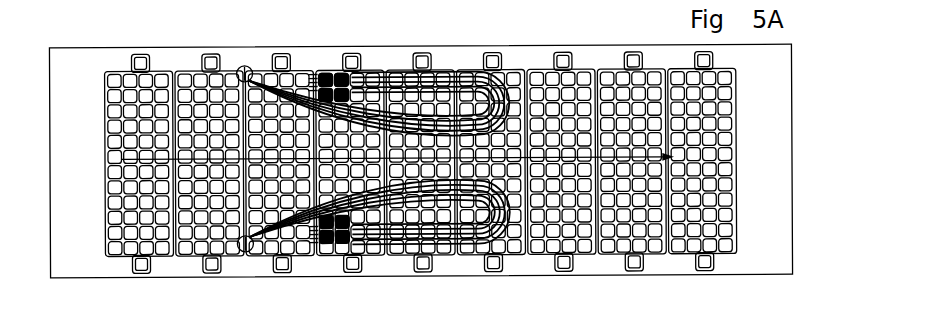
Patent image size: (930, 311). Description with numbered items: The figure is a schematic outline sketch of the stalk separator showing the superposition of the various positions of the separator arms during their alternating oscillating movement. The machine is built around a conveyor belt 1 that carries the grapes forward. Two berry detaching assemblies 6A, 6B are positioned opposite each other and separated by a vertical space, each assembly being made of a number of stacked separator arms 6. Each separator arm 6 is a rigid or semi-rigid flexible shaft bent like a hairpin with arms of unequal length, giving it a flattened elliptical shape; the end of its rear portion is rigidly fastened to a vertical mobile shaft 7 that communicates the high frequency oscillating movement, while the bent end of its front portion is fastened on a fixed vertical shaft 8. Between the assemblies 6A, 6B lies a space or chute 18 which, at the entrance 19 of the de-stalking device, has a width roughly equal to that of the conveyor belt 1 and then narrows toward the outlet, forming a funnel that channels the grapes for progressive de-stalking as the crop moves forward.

The conveyor belt 1 is at (420, 177).
The separator arm 6 is at (355, 192).
The berry detaching assembly 6A is at (512, 95).
The berry detaching assembly 6B is at (512, 221).
The vertical mobile shaft 7 is at (327, 252).
The fixed vertical shaft 8 is at (243, 253).
The chute 18 is at (426, 182).
The entrance 19 is at (198, 205).